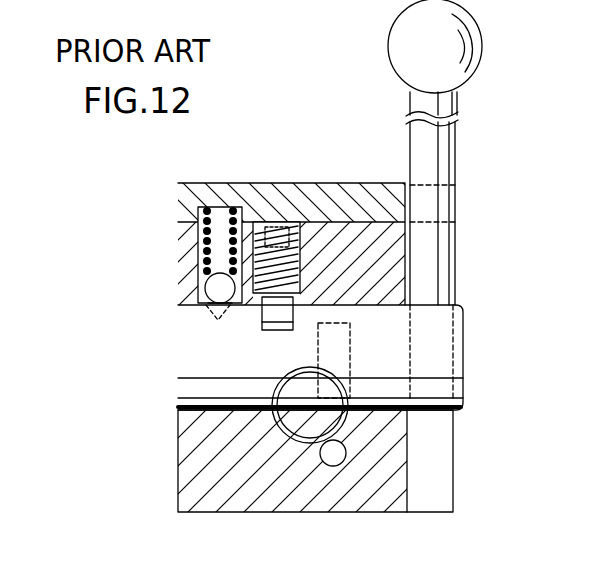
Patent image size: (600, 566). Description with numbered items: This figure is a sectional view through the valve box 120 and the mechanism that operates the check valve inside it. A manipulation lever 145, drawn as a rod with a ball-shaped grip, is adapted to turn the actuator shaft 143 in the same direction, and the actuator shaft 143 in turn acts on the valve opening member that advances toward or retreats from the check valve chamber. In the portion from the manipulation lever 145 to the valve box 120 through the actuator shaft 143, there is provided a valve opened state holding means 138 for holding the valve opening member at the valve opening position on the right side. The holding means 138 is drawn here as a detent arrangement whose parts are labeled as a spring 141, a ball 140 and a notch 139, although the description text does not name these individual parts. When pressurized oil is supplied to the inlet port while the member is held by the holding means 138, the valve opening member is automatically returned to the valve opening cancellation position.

The valve box 120 is at (176, 463).
The valve opened state holding means 138 is at (80, 248).
The detent notch 139 is at (210, 310).
The detent ball 140 is at (180, 300).
The detent spring 141 is at (180, 262).
The actuator shaft 143 is at (183, 385).
The manipulation lever 145 is at (443, 267).